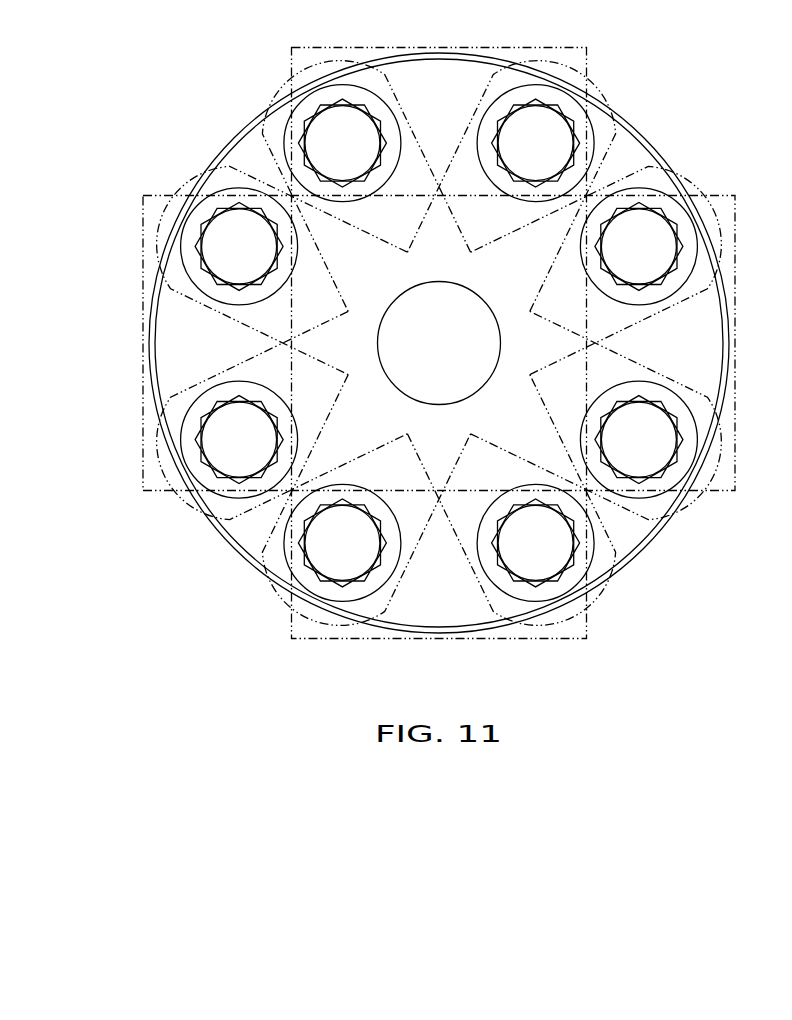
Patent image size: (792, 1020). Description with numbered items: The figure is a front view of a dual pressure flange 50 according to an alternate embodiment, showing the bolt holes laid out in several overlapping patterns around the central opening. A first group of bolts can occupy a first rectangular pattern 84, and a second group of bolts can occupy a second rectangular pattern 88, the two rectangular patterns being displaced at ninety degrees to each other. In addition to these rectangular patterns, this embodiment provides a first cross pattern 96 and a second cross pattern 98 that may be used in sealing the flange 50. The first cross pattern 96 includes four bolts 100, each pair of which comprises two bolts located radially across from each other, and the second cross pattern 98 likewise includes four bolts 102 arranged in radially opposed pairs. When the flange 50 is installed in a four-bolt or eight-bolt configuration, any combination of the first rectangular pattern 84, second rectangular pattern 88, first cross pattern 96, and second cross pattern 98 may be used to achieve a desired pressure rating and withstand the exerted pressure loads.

The dual pressure flange 50 is at (703, 118).
The first rectangular pattern 84 is at (735, 268).
The second rectangular pattern 88 is at (317, 640).
The first cross pattern 96 is at (600, 90).
The second cross pattern 98 is at (281, 92).
The bolts 100 is at (560, 146).
The bolts 102 is at (330, 146).